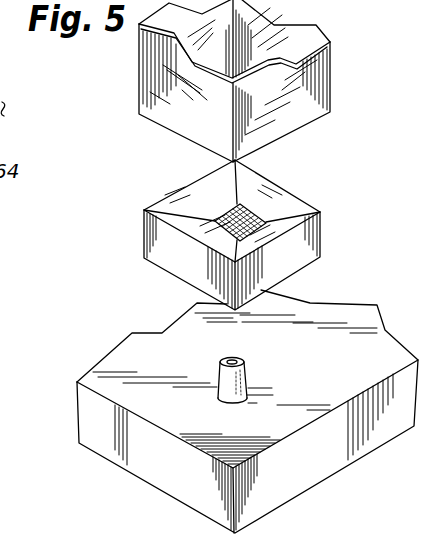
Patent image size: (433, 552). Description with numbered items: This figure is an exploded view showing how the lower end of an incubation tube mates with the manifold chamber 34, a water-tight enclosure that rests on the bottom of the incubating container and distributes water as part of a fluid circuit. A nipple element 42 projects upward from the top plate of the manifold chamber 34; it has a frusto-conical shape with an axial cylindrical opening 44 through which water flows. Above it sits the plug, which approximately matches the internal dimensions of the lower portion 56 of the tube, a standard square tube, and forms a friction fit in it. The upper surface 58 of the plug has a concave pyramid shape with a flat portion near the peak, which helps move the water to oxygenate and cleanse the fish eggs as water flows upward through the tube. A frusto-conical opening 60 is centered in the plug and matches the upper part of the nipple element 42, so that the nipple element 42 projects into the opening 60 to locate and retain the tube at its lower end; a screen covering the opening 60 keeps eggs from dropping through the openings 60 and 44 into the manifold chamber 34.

The manifold chamber 34 is at (160, 491).
The nipple element 42 is at (248, 381).
The axial cylindrical opening 44 is at (245, 360).
The lower portion 56 is at (331, 74).
The upper surface 58 is at (281, 193).
The frusto-conical opening 60 is at (239, 205).